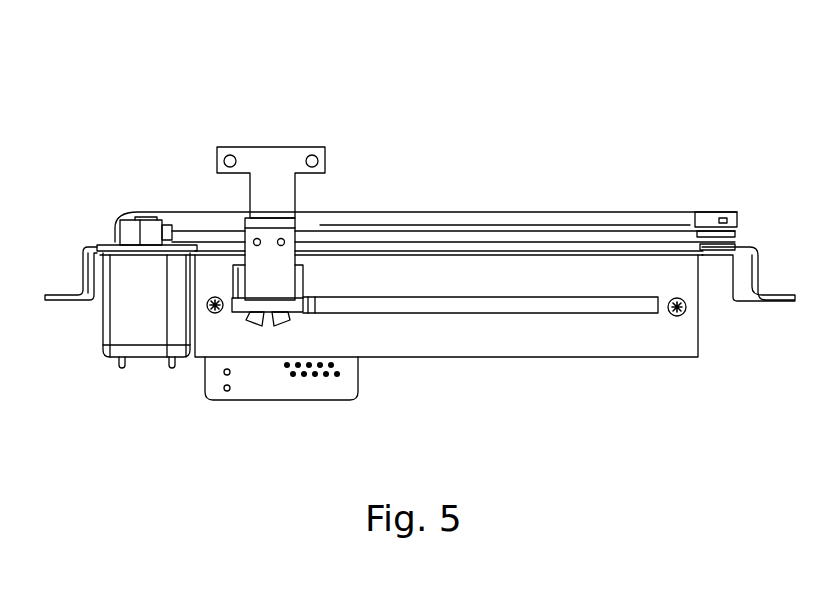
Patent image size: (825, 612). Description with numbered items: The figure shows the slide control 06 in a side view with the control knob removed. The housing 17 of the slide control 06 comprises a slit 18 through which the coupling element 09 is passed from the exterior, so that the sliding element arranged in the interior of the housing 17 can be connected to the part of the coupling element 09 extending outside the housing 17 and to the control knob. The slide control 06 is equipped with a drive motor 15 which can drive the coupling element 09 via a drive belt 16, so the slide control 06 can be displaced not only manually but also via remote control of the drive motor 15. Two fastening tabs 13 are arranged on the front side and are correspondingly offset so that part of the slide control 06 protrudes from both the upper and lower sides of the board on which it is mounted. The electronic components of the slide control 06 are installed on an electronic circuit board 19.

The slide control 06 is at (639, 110).
The coupling element 09 is at (272, 162).
The fastening tabs 13 is at (60, 300).
The drive motor 15 is at (142, 335).
The drive belt 16 is at (447, 228).
The housing 17 is at (638, 343).
The slit 18 is at (572, 303).
The electronic circuit board 19 is at (322, 388).